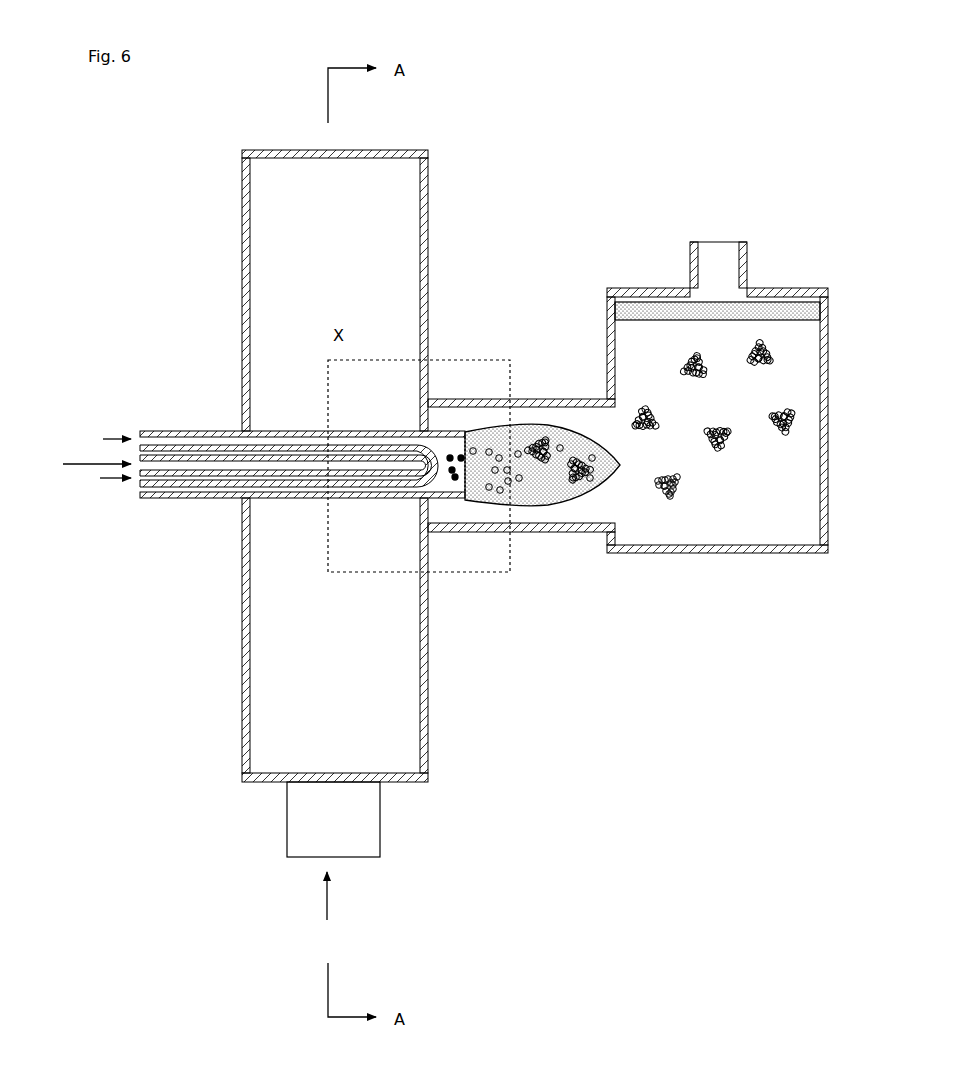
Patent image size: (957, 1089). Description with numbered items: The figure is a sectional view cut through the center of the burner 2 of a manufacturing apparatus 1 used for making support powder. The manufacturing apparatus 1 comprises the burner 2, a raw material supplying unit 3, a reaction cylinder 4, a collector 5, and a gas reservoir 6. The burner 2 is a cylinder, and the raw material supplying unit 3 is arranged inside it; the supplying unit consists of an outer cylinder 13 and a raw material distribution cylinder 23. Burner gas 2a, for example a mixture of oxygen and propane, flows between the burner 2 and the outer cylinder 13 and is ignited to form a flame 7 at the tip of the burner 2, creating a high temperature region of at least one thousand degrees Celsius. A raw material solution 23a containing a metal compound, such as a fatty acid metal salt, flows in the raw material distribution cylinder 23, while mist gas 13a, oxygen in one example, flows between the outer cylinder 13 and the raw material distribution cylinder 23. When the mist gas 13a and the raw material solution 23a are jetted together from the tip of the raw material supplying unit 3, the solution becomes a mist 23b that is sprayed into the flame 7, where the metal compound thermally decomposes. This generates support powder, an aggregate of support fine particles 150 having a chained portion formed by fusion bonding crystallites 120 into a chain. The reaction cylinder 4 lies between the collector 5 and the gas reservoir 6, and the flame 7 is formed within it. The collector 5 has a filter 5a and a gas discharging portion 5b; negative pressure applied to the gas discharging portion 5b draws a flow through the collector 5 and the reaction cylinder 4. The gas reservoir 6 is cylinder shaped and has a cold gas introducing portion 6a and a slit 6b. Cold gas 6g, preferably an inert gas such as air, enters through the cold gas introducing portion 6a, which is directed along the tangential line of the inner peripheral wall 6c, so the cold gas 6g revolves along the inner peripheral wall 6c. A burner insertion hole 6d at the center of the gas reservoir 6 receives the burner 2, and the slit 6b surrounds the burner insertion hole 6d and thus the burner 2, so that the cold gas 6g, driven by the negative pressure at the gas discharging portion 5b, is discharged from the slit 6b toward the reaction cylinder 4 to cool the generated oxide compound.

The manufacturing apparatus 1 is at (587, 185).
The burner 2 is at (191, 432).
The burner gas 2a is at (102, 440).
The raw material supplying unit 3 is at (442, 440).
The reaction cylinder 4 is at (545, 398).
The collector 5 is at (830, 368).
The filter 5a is at (815, 311).
The gas discharging portion 5b is at (748, 262).
The gas reservoir 6 is at (440, 163).
The cold gas introducing portion 6a is at (381, 820).
The slit 6b is at (416, 415).
The inner peripheral wall 6c is at (285, 159).
The burner insertion hole 6d is at (238, 426).
The cold gas 6g is at (324, 910).
The flame 7 is at (583, 502).
The outer cylinder 13 is at (157, 486).
The mist gas 13a is at (100, 479).
The raw material distribution cylinder 23 is at (157, 457).
The raw material solution 23a is at (78, 465).
The mist 23b is at (455, 482).
The crystallite 120 is at (487, 492).
The support fine particles 150 is at (583, 430).